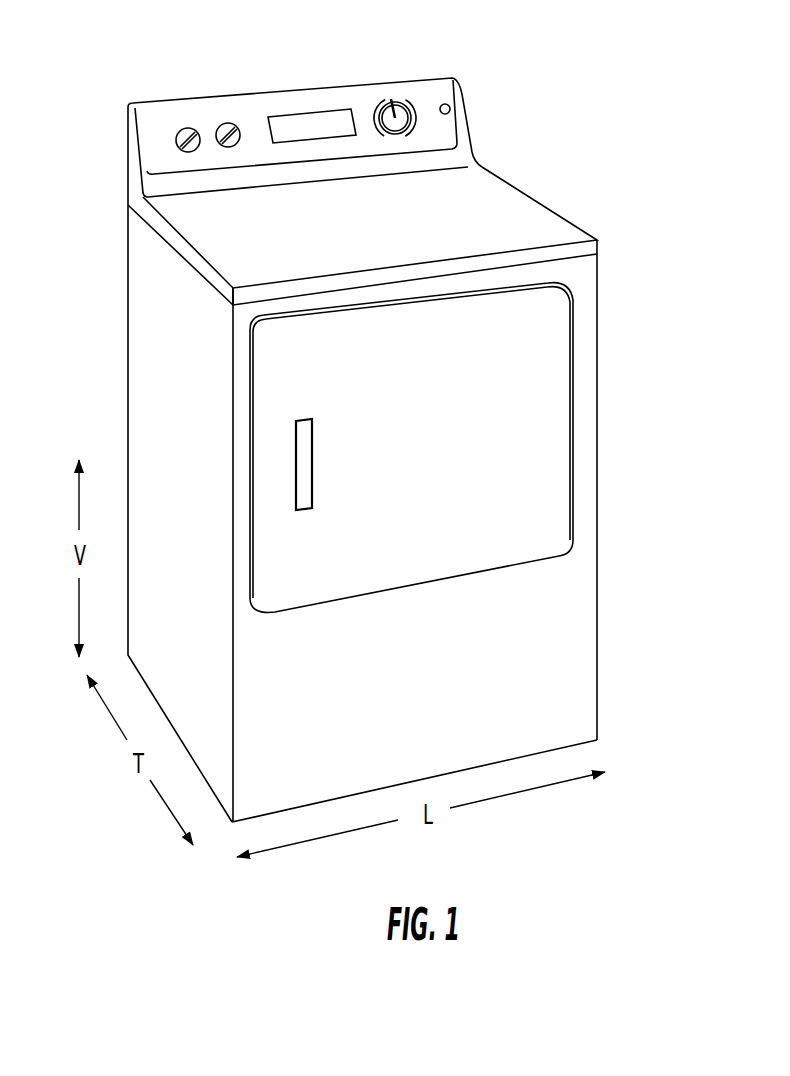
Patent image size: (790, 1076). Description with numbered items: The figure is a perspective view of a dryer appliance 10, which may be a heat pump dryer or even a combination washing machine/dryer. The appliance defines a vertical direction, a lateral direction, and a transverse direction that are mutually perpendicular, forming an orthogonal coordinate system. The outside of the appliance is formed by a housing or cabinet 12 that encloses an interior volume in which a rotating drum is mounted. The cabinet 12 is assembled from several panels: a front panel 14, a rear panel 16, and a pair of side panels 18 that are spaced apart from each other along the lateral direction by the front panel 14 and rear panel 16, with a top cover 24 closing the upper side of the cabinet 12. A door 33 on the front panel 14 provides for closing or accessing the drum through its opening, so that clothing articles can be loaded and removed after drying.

The dryer appliance 10 is at (372, 415).
The cabinet 12 is at (568, 658).
The front panel 14 is at (545, 718).
The rear panel 16 is at (128, 278).
The side panel 18 is at (157, 432).
The top cover 24 is at (480, 194).
The door 33 is at (543, 423).